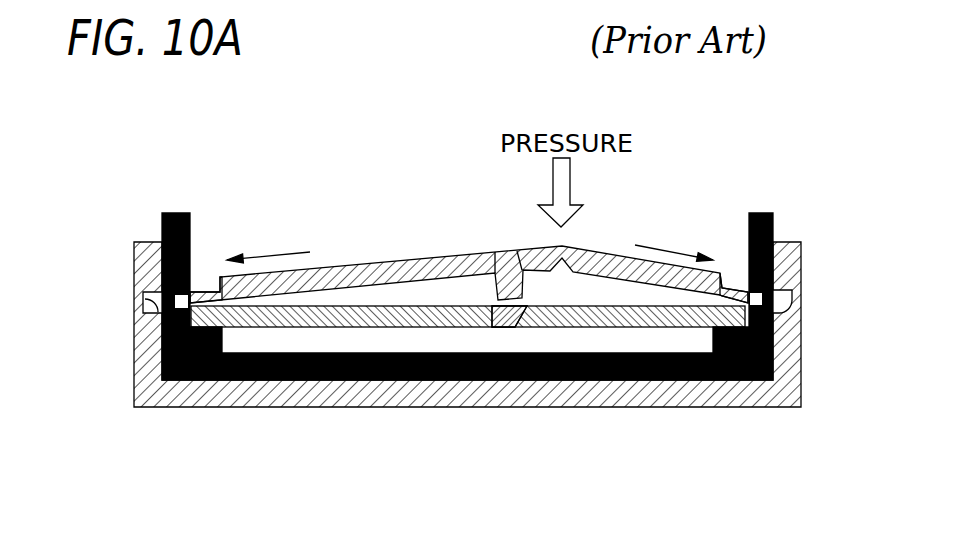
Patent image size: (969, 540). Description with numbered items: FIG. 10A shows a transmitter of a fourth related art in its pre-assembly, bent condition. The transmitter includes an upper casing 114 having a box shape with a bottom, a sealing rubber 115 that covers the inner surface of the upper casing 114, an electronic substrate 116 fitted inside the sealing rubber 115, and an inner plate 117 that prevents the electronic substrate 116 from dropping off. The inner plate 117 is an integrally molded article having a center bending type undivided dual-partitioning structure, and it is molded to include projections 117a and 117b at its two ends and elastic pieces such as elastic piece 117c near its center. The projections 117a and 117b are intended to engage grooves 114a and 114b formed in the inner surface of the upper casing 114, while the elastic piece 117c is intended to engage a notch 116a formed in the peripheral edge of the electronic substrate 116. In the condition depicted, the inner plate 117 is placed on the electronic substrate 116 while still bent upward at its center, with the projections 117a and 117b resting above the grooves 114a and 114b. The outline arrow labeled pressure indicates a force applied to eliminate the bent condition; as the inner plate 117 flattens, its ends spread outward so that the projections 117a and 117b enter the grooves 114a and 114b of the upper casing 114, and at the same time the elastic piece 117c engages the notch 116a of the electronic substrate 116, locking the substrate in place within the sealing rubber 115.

The upper casing 114 is at (801, 375).
The groove 114a is at (801, 292).
The groove 114b is at (143, 297).
The sealing rubber 115 is at (762, 218).
The electronic substrate 116 is at (398, 328).
The notch 116a is at (523, 312).
The inner plate 117 is at (358, 264).
The projection 117a is at (727, 290).
The projection 117b is at (207, 290).
The elastic piece 117c is at (507, 248).